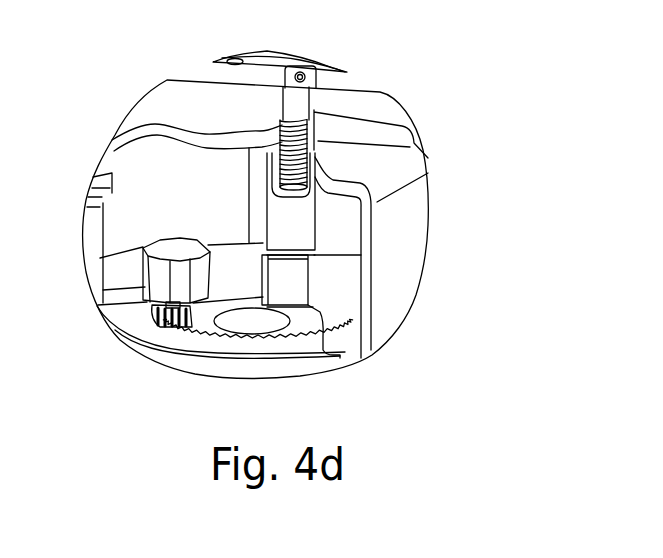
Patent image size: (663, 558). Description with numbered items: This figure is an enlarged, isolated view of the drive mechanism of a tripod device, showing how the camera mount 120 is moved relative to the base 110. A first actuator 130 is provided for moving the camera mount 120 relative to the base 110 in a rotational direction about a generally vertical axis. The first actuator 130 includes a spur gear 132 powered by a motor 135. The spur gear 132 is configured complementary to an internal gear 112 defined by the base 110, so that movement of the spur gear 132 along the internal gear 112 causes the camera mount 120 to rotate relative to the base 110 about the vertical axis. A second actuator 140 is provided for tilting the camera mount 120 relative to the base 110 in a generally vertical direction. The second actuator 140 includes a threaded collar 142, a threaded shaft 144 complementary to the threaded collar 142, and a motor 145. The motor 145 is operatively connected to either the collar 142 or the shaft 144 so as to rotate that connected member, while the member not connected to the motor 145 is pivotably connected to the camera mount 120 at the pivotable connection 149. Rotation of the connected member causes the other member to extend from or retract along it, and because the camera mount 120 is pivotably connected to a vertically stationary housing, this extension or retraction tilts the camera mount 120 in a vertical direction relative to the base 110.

The base 110 is at (213, 368).
The internal gear 112 is at (300, 336).
The camera mount 120 is at (267, 52).
The first actuator 130 is at (112, 277).
The spur gear 132 is at (182, 324).
The motor 135 is at (152, 288).
The second actuator 140 is at (343, 220).
The threaded collar 142 is at (297, 223).
The threaded shaft 144 is at (293, 106).
The motor 145 is at (292, 283).
The pivotable connection 149 is at (320, 78).